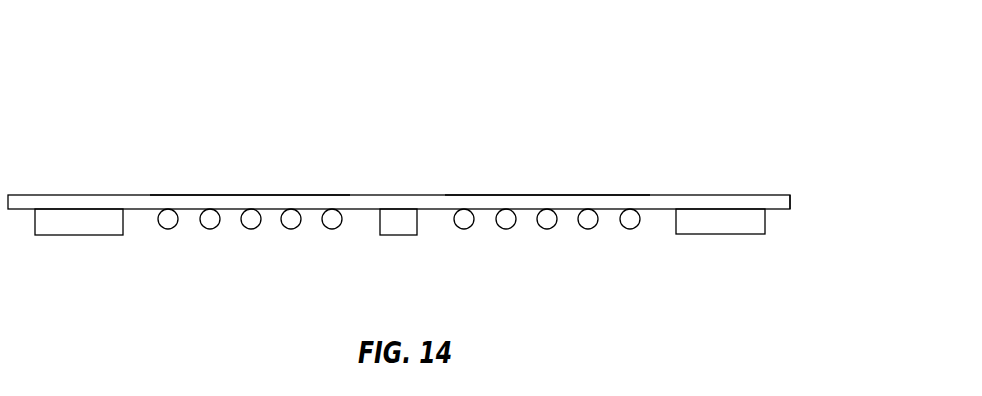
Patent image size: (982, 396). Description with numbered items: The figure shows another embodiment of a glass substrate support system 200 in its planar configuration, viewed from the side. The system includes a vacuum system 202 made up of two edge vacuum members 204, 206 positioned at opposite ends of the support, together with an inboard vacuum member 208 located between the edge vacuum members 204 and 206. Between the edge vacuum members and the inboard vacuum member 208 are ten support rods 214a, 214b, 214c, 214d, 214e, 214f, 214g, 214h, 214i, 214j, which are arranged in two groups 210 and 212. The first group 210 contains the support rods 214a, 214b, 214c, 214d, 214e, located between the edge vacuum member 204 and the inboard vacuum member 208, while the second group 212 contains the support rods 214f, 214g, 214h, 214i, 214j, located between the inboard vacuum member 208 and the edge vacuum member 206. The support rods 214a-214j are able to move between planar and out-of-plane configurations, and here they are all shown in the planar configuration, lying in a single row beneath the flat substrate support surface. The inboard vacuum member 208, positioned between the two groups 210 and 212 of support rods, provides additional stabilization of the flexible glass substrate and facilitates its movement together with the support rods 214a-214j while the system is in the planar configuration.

The glass substrate support system 200 is at (669, 78).
The vacuum system 202 is at (741, 267).
The edge vacuum member 204 is at (108, 257).
The edge vacuum member 206 is at (800, 224).
The inboard vacuum member 208 is at (411, 257).
The group of support rods 210 is at (264, 95).
The group of support rods 212 is at (525, 107).
The support rod 214a is at (167, 210).
The support rod 214b is at (210, 210).
The support rod 214c is at (251, 210).
The support rod 214d is at (290, 210).
The support rod 214e is at (332, 210).
The support rod 214f is at (460, 210).
The support rod 214g is at (506, 210).
The support rod 214h is at (545, 210).
The support rod 214i is at (585, 210).
The support rod 214j is at (629, 210).